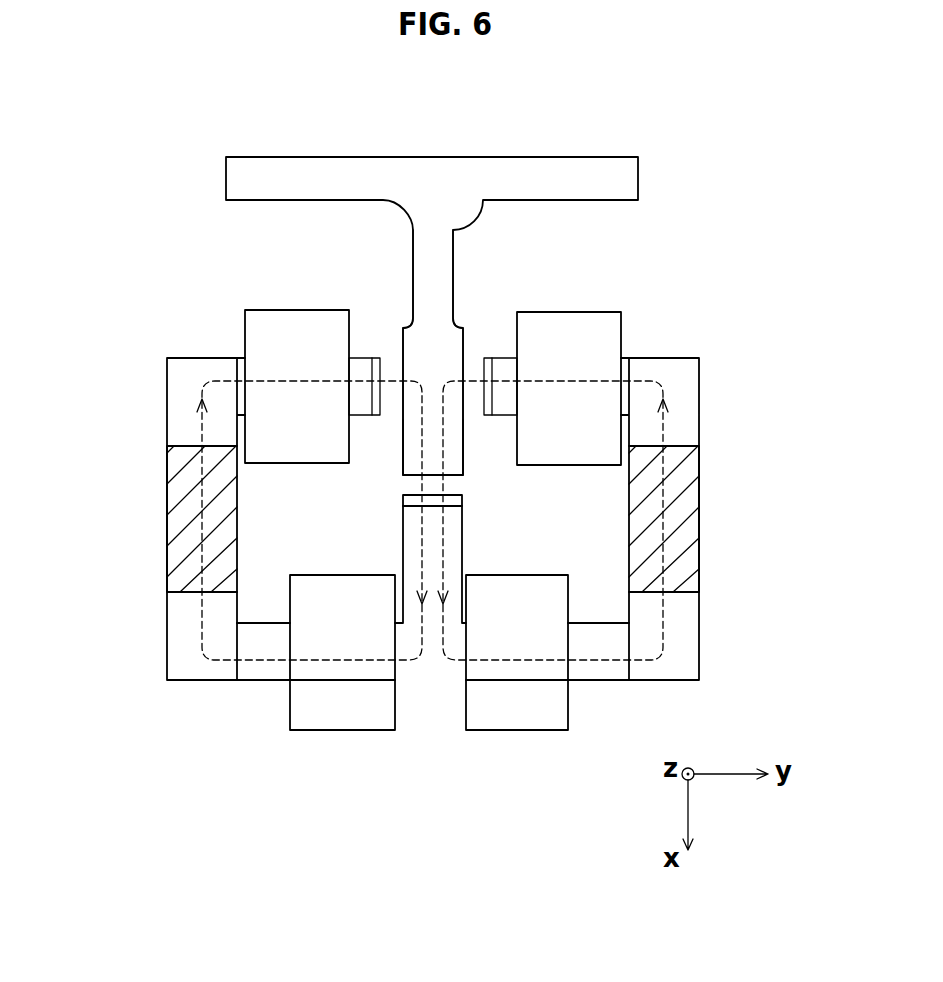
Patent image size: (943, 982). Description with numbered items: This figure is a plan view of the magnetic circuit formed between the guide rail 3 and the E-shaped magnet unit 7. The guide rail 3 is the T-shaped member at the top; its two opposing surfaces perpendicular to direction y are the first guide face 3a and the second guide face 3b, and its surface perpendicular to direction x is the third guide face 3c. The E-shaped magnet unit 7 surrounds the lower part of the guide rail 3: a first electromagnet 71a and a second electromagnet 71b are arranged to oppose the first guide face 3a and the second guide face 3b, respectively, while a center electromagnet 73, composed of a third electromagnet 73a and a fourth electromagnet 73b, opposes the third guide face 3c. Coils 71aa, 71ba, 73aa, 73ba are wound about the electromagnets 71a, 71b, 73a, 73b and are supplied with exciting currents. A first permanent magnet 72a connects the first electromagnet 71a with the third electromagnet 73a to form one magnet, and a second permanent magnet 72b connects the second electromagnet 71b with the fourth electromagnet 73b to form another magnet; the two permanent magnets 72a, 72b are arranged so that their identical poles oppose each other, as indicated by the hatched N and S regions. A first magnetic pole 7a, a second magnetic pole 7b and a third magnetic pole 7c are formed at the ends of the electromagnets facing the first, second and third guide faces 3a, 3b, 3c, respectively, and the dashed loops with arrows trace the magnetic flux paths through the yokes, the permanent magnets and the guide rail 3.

The guide rail 3 is at (495, 173).
The first guide face 3a is at (401, 348).
The second guide face 3b is at (466, 348).
The third guide face 3c is at (452, 477).
The E-shaped magnet unit 7 is at (441, 552).
The first magnetic pole 7a is at (381, 394).
The second magnetic pole 7b is at (485, 394).
The third magnetic pole 7c is at (402, 491).
The first electromagnet 71a is at (228, 519).
The coil 71aa is at (258, 345).
The second electromagnet 71b is at (633, 516).
The coil 71ba is at (603, 345).
The first permanent magnet 72a is at (192, 517).
The second permanent magnet 72b is at (672, 533).
The center electromagnet 73 is at (424, 654).
The third electromagnet 73a is at (263, 683).
The coil 73aa is at (335, 715).
The fourth electromagnet 73b is at (593, 683).
The coil 73ba is at (503, 715).